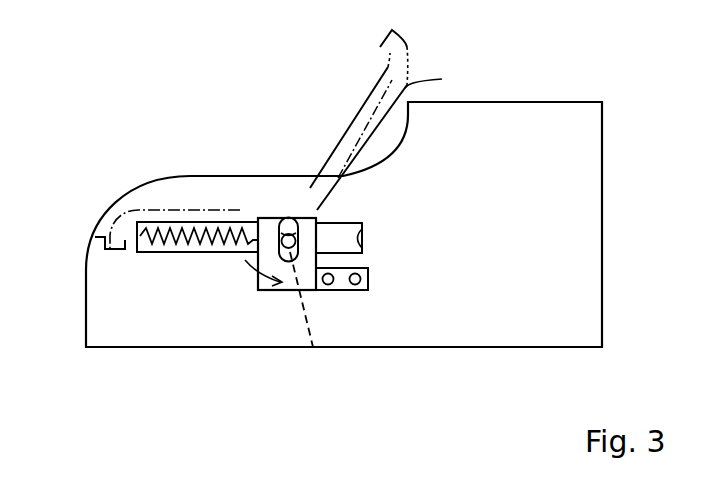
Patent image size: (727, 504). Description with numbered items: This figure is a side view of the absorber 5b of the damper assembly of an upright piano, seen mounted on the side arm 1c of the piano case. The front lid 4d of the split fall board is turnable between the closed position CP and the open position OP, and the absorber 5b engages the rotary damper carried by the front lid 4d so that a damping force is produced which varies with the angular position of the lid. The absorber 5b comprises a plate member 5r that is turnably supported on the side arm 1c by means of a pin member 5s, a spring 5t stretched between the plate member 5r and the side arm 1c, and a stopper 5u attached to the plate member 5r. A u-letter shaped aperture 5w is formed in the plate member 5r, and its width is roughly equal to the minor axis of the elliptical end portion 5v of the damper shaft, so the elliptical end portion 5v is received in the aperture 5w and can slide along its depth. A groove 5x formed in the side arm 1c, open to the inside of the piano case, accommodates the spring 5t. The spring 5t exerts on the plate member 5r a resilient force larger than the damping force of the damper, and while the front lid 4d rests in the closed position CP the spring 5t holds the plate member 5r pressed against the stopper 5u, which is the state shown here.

The side arm 1c is at (558, 120).
The open position OP is at (407, 45).
The front lid 4d is at (66, 229).
The closed position CP is at (162, 210).
The absorber 5b is at (240, 292).
The u-letter shaped aperture 5w is at (281, 218).
The elliptical end portion 5v is at (290, 220).
The spring 5t is at (195, 253).
The plate member 5r is at (282, 290).
The pin member 5s is at (313, 347).
The stopper 5u is at (362, 290).
The groove 5x is at (363, 253).